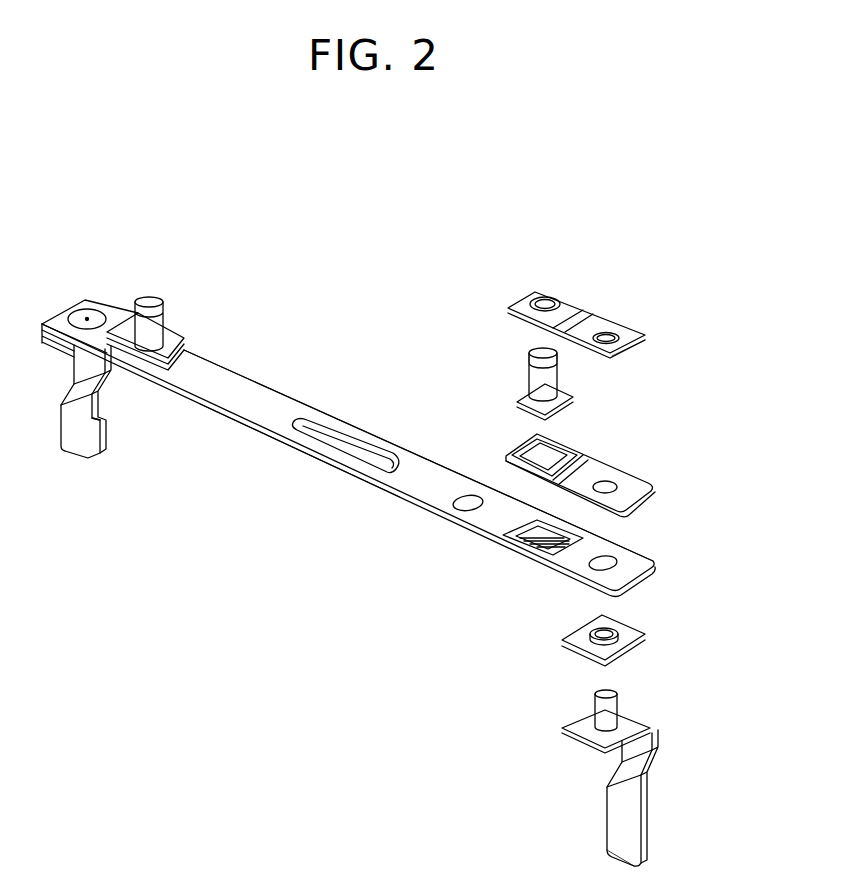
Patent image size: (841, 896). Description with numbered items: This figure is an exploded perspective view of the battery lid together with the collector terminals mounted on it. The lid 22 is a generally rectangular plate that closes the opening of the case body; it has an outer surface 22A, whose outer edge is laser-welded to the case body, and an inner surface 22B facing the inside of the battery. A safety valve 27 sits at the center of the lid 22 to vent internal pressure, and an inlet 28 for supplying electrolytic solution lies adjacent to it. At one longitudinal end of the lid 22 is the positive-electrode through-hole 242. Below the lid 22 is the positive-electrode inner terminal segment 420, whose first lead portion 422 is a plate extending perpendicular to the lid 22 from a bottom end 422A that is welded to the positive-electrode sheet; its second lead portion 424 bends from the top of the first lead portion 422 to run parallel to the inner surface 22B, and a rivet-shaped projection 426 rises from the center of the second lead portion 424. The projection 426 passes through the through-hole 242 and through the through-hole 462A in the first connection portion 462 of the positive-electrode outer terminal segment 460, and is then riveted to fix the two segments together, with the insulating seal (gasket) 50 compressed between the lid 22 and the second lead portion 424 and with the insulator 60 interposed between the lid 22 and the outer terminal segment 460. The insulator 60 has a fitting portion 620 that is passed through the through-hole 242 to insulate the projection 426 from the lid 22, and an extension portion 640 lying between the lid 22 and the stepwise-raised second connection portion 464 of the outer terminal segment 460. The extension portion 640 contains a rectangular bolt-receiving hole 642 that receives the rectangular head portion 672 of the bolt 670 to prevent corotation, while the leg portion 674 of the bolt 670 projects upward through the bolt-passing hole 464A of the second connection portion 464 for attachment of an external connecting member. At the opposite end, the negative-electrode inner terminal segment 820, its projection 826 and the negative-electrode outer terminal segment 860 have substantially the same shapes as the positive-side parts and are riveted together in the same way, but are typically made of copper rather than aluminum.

The lid 22 is at (303, 398).
The outer surface of the lid 22A is at (258, 400).
The inner surface of the lid 22B is at (272, 440).
The safety valve 27 is at (340, 447).
The inlet 28 is at (463, 512).
The positive-electrode through-hole 242 is at (618, 563).
The negative-electrode inner terminal segment 820 is at (76, 379).
The projection 826 is at (100, 302).
The negative-electrode outer terminal segment 860 is at (188, 336).
The bolt 670 is at (158, 325).
The leg portion 674 is at (533, 357).
The head portion 672 is at (525, 397).
The positive-electrode outer terminal segment 460 is at (606, 300).
The second connection portion 464 is at (565, 292).
The bolt-passing hole 464A is at (540, 295).
The first connection portion 462 is at (642, 352).
The through-hole 462A is at (608, 327).
The insulator 60 is at (576, 465).
The fitting portion 620 is at (655, 493).
The extension portion 640 is at (567, 441).
The bolt-receiving hole 642 is at (520, 450).
The insulating seal (gasket) 50 is at (557, 657).
The positive-electrode inner terminal segment 420 is at (618, 774).
The second lead portion 424 is at (580, 740).
The projection 426 is at (617, 702).
The first lead portion 422 is at (658, 753).
The bottom end 422A is at (643, 827).